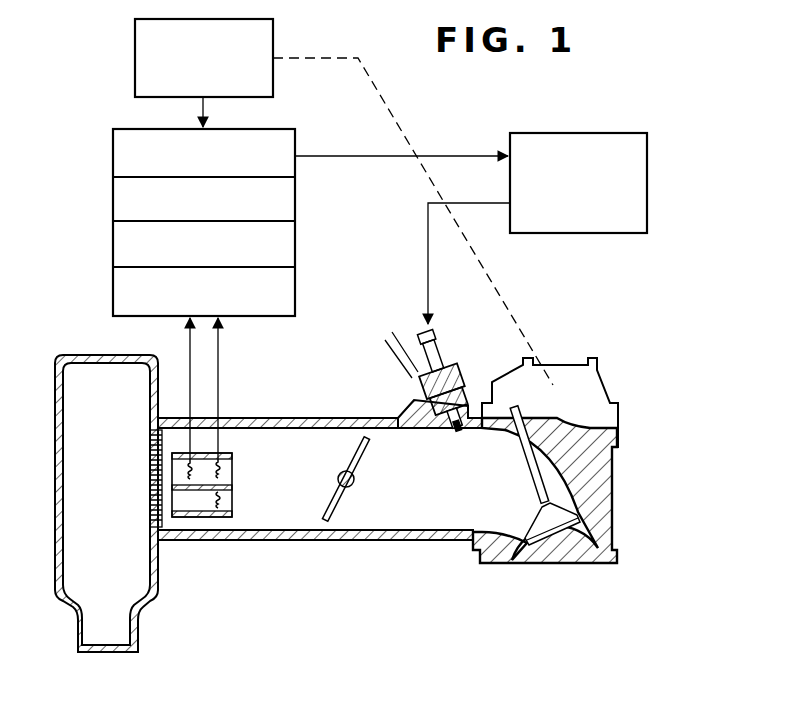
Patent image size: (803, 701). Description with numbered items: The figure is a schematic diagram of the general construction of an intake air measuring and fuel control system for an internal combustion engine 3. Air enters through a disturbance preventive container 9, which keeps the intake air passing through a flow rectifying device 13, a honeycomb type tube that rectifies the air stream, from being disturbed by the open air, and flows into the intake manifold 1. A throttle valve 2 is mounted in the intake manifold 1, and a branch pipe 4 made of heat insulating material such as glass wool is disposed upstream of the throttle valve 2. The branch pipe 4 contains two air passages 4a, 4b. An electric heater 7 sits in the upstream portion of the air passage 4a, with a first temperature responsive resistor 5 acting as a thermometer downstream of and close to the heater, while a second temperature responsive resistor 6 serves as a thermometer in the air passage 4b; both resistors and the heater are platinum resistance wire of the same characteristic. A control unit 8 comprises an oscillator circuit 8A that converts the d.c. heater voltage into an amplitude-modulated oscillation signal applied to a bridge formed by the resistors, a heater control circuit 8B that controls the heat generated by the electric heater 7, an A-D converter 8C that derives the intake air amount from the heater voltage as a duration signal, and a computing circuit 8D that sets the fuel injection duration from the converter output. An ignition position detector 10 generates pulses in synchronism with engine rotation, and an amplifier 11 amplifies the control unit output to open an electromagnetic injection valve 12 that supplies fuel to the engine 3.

The intake manifold 1 is at (472, 522).
The throttle valve 2 is at (369, 446).
The internal combustion engine 3 is at (603, 513).
The branch pipe 4 is at (217, 444).
The air passage 4a is at (224, 473).
The air passage 4b is at (224, 497).
The first temperature responsive resistor 5 is at (228, 465).
The second temperature responsive resistor 6 is at (230, 506).
The electric heater 7 is at (187, 464).
The control unit 8 is at (196, 217).
The oscillator circuit 8A is at (296, 296).
The heater control circuit 8B is at (296, 246).
The A-D converter 8C is at (296, 200).
The computing circuit 8D is at (296, 146).
The disturbance preventive container 9 is at (55, 460).
The ignition position detector 10 is at (135, 50).
The amplifier 11 is at (648, 198).
The electromagnetic injection valve 12 is at (455, 347).
The flow rectifying device 13 is at (150, 512).